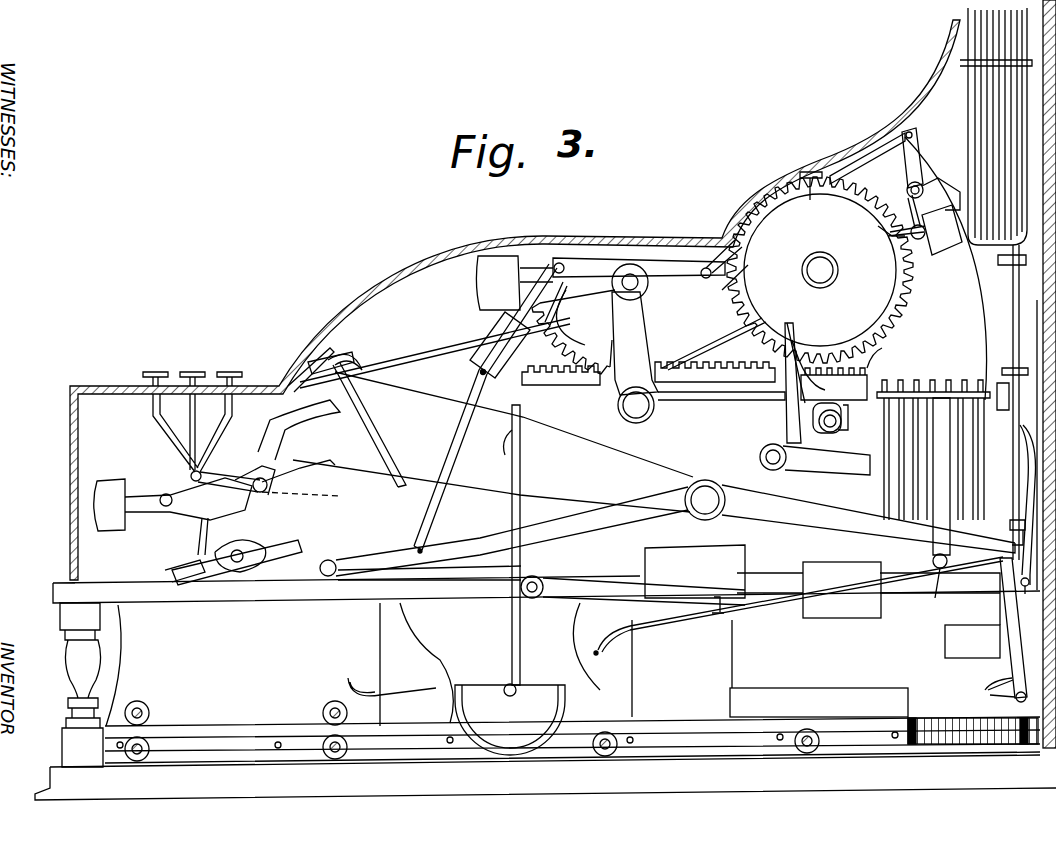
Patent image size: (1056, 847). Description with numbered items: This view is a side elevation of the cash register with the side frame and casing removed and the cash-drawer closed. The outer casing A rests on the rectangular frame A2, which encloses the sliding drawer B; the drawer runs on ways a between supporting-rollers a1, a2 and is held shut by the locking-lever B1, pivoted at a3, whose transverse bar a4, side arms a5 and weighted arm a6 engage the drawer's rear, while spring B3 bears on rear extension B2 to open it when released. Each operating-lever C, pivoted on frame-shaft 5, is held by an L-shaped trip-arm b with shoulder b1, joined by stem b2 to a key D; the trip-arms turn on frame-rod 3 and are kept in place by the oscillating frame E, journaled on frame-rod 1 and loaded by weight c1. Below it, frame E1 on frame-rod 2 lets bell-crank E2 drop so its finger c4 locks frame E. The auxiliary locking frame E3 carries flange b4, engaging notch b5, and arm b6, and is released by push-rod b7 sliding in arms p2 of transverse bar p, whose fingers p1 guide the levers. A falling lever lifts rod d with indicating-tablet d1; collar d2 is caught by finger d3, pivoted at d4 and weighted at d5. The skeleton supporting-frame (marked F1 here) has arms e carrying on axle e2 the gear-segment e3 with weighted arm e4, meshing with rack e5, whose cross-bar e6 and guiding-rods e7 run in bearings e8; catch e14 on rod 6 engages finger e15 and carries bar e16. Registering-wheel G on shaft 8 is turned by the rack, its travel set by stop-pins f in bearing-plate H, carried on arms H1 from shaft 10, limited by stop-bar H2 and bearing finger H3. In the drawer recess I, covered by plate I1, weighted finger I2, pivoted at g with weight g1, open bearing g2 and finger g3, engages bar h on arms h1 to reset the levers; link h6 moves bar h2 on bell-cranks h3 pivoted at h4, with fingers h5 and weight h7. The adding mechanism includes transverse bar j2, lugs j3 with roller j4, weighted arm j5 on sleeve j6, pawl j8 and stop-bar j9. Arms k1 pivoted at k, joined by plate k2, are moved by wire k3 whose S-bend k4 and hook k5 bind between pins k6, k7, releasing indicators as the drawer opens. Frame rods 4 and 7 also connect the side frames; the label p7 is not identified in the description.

The outer casing A is at (500, 300).
The rectangular frame A2 is at (533, 589).
The sliding drawer B is at (545, 701).
The locking-lever B1 is at (615, 588).
The rear extension B2 is at (810, 693).
The spring B3 is at (937, 722).
The operating-levers C is at (416, 444).
The keys D is at (192, 365).
The oscillating frame E is at (146, 498).
The pivoted frame E1 is at (241, 550).
The bell-crank arm E2 is at (190, 556).
The auxiliary locking bar or frame E3 is at (268, 436).
The rack F1 is at (720, 382).
The registering-wheel G is at (820, 270).
The bearing-plate H is at (930, 385).
The pivoted arms H1 is at (945, 474).
The stop-bar H2 is at (1010, 395).
The projecting finger H3 is at (946, 268).
The pocket or recess I is at (468, 653).
The plate I1 is at (401, 655).
The weighted lever or finger I2 is at (519, 565).
The guides or ways a is at (840, 713).
The supporting-roller a1 is at (140, 711).
The supporting-roller a2 is at (142, 747).
The pivots a3 is at (543, 584).
The transverse bar a4 is at (352, 555).
The side arms or fingers a5 is at (450, 578).
The central weighted arm a6 is at (585, 585).
The L-shaped trip-arm b is at (232, 478).
The notched seat or shoulder b1 is at (300, 462).
The rod or stem b2 is at (168, 435).
The projecting flange b4 is at (300, 447).
The notch or shoulder b5 is at (288, 380).
The projecting arm b6 is at (301, 494).
The push-rod b7 is at (428, 355).
The weight c1 is at (109, 505).
The finger or arm c4 is at (200, 528).
The reciprocating rod or stem d is at (1020, 275).
The indicating-tablet d1 is at (968, 112).
The projection d2 is at (1012, 525).
The projecting finger d3 is at (1035, 505).
The pivot d4 is at (1017, 630).
The weighted extremity d5 is at (972, 641).
The upwardly-projecting arms e is at (635, 343).
The axle e2 is at (630, 286).
The gear-segment e3 is at (590, 325).
The extended weighted arm e4 is at (514, 283).
The rack e5 is at (561, 376).
The cross-bar e6 is at (834, 384).
The longitudinal guiding-rods e7 is at (855, 417).
The guiding-bearings e8 is at (880, 353).
The hook-shaped catch e14 is at (786, 420).
The projecting finger e15 is at (806, 362).
The projecting bar e16 is at (826, 460).
The vertical sliding stop-pins f is at (884, 496).
The pivot g is at (516, 688).
The weighted extremity g1 is at (510, 720).
The open bearing g2 is at (508, 455).
The projecting finger g3 is at (522, 445).
The rod or bar h is at (330, 562).
The arms h1 is at (472, 545).
The transverse rod or bar h2 is at (703, 270).
The pivoted bell-crank arms h3 is at (600, 262).
The pivot h4 is at (565, 296).
The projecting fingers h5 is at (729, 284).
The connecting-link h6 is at (440, 518).
The weight h7 is at (490, 336).
The transverse bar j2 is at (930, 230).
The projecting arms or lugs j3 is at (920, 163).
The small roller j4 is at (886, 238).
The depending weighted arm j5 is at (943, 188).
The sleeve j6 is at (910, 217).
The pivoted pawl j8 is at (867, 158).
The stop-bar j9 is at (811, 193).
The pivot k is at (1012, 697).
The small projecting arm k1 is at (1008, 675).
The plate k2 is at (985, 690).
The wire k3 is at (770, 606).
The S-shaped bend k4 is at (612, 646).
The hook-shaped end k5 is at (390, 674).
The projecting pin k6 is at (594, 650).
The projecting pin k7 is at (707, 620).
The transverse bar p is at (330, 358).
The projecting fingers p1 is at (375, 436).
The small projecting arms p2 is at (348, 365).
The rod p7 is at (680, 362).
The frame-rod 1 is at (165, 496).
The frame-rod 2 is at (245, 552).
The frame-rod 3 is at (267, 488).
The frame rod or shaft 4 is at (640, 410).
The frame-shaft 5 is at (850, 516).
The frame rod or shaft 6 is at (760, 457).
The transverse connecting rod or shaft 7 is at (831, 425).
The frame rod or shaft 8 is at (824, 276).
The frame shaft or rod 10 is at (940, 592).